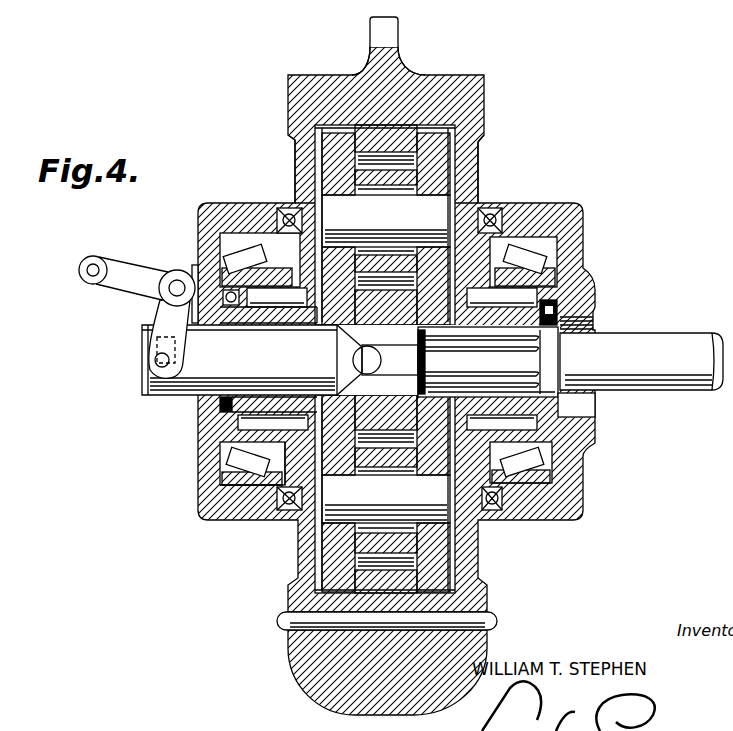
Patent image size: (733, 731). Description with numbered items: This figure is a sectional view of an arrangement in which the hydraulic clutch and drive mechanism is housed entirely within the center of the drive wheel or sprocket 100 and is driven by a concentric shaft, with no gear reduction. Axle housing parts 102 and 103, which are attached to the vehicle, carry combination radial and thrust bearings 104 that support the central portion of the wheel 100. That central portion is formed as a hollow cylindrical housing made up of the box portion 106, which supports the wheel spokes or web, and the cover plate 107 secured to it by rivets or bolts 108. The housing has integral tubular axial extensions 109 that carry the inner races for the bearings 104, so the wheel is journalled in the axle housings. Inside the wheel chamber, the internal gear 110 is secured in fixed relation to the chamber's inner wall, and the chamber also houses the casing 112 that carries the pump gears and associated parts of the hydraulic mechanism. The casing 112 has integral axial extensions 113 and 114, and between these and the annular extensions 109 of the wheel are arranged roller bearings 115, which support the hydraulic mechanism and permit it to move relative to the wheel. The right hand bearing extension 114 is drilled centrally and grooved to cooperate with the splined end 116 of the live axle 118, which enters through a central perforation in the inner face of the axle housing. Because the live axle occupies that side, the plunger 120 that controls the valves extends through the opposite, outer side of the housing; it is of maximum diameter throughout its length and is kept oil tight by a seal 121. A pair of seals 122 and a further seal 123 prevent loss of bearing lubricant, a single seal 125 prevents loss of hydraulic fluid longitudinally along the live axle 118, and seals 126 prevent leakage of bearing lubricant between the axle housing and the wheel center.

The drive wheel or sprocket 100 is at (407, 68).
The axle housing part 102 is at (531, 209).
The axle housing part 103 is at (235, 209).
The combination radial and thrust bearings 104 is at (204, 236).
The box portion 106 is at (295, 135).
The cover plate 107 is at (478, 148).
The rivets or bolts 108 is at (495, 615).
The tubular axial extensions 109 is at (535, 253).
The internal gear 110 is at (417, 123).
The casing 112 is at (457, 162).
The axial extension 113 is at (287, 316).
The right hand bearing extension 114 is at (488, 323).
The roller bearings 115 is at (594, 297).
The splined end 116 is at (573, 427).
The live axle 118 is at (683, 343).
The plunger 120 is at (184, 396).
The seal 121 is at (222, 412).
The seals 122 is at (223, 430).
The seal 123 is at (225, 463).
The seal 125 is at (595, 322).
The seals 126 is at (282, 207).